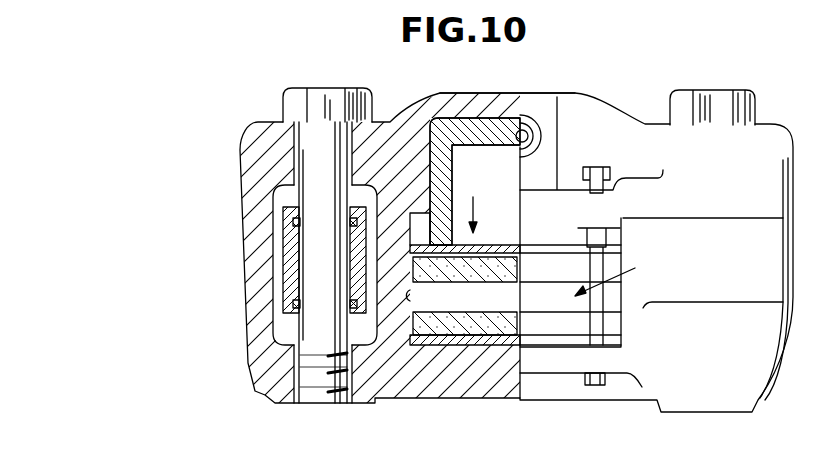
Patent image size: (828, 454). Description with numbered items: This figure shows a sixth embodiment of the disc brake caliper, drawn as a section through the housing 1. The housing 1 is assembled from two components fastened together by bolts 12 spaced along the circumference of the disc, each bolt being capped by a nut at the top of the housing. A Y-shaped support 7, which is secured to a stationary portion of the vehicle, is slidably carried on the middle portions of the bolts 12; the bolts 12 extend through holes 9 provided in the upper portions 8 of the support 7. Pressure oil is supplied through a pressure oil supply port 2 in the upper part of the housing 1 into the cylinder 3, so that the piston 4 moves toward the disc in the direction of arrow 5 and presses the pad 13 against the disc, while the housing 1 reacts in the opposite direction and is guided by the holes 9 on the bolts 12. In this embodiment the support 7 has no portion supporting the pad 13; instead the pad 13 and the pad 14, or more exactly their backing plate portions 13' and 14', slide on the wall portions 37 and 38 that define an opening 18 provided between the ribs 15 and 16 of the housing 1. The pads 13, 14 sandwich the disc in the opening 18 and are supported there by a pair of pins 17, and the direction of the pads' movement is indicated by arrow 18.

The housing 1 is at (437, 398).
The pressure oil supply port 2 is at (533, 133).
The cylinder 3 is at (470, 120).
The piston 4 is at (500, 124).
The arrow 5 is at (478, 208).
The support 7 is at (284, 273).
The upper portion of the support 8 is at (288, 245).
The hole 9 is at (300, 291).
The bolt 12 is at (333, 98).
The pad 13 is at (515, 250).
The backing plate portion 13' is at (486, 194).
The pad 14 is at (515, 314).
The backing plate portion 14' is at (478, 309).
The rib 15 is at (597, 212).
The rib 16 is at (592, 388).
The pin 17 is at (593, 321).
The opening 18 is at (618, 272).
The wall portion 37 is at (408, 296).
The wall portion 38 is at (628, 300).